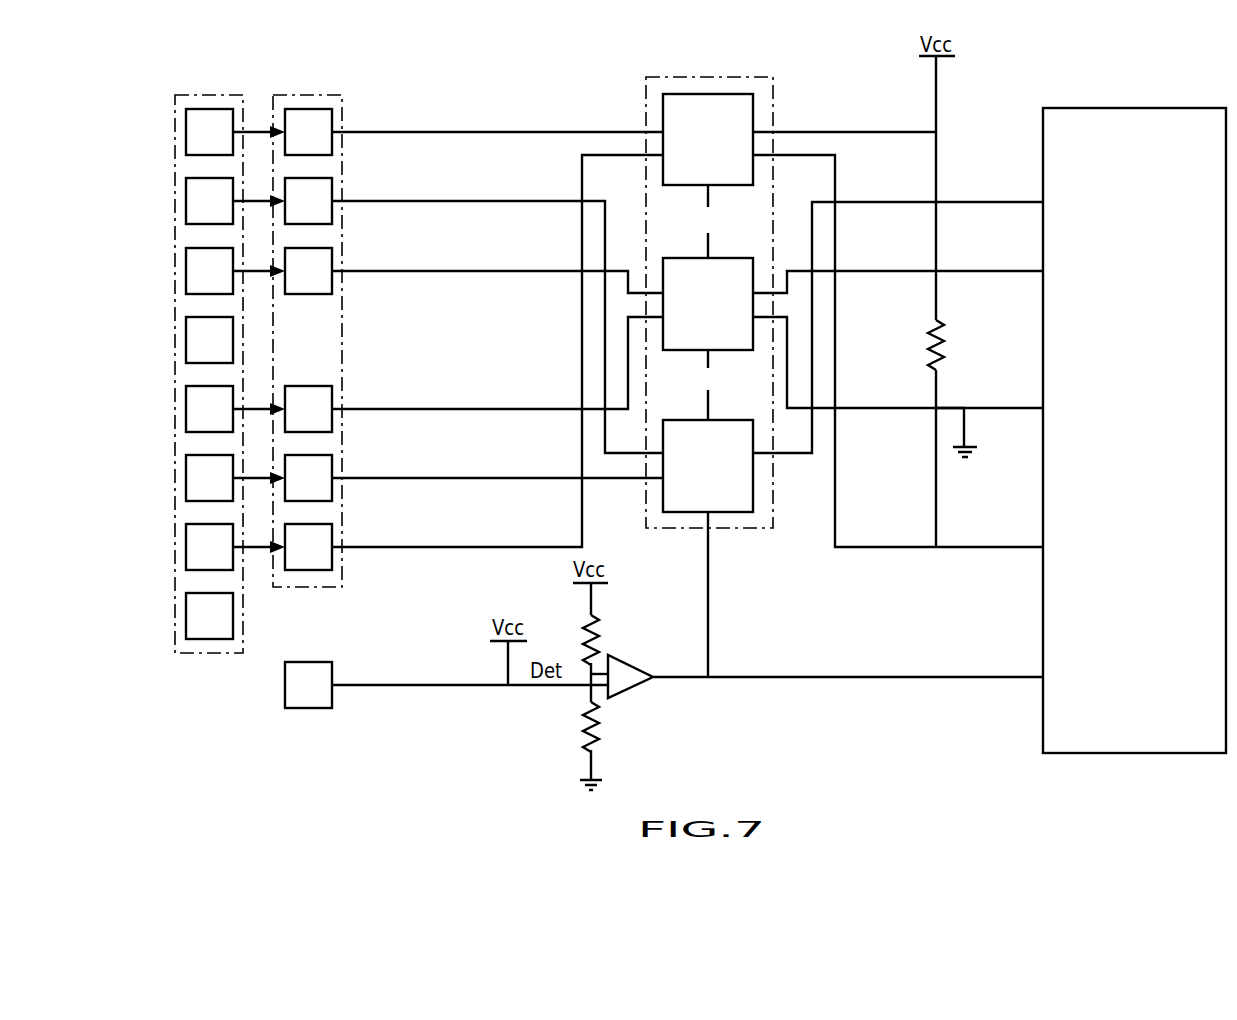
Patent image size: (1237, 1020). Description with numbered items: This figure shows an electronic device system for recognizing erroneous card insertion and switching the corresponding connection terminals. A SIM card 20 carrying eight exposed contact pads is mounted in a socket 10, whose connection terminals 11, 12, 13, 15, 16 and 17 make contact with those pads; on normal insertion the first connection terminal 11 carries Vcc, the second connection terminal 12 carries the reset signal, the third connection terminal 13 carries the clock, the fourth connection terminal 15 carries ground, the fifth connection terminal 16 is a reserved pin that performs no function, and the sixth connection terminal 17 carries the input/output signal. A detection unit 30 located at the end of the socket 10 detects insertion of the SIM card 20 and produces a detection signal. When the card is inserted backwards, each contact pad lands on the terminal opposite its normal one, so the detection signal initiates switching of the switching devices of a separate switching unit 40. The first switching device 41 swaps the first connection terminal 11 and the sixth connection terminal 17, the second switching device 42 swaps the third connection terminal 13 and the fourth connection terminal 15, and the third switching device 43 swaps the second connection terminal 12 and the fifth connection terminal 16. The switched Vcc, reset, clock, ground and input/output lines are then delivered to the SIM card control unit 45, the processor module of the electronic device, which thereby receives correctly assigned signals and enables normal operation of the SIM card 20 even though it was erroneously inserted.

The socket 10 is at (322, 96).
The first connection terminal 11 is at (332, 118).
The second connection terminal 12 is at (332, 187).
The third connection terminal 13 is at (332, 257).
The fourth connection terminal 15 is at (332, 395).
The fifth connection terminal 16 is at (332, 464).
The sixth connection terminal 17 is at (332, 533).
The SIM card 20 is at (231, 96).
The detection unit 30 is at (300, 662).
The switching unit 40 is at (740, 78).
The first switching device 41 is at (687, 186).
The second switching device 42 is at (733, 258).
The third switching device 43 is at (733, 420).
The SIM card control unit 45 is at (1190, 109).